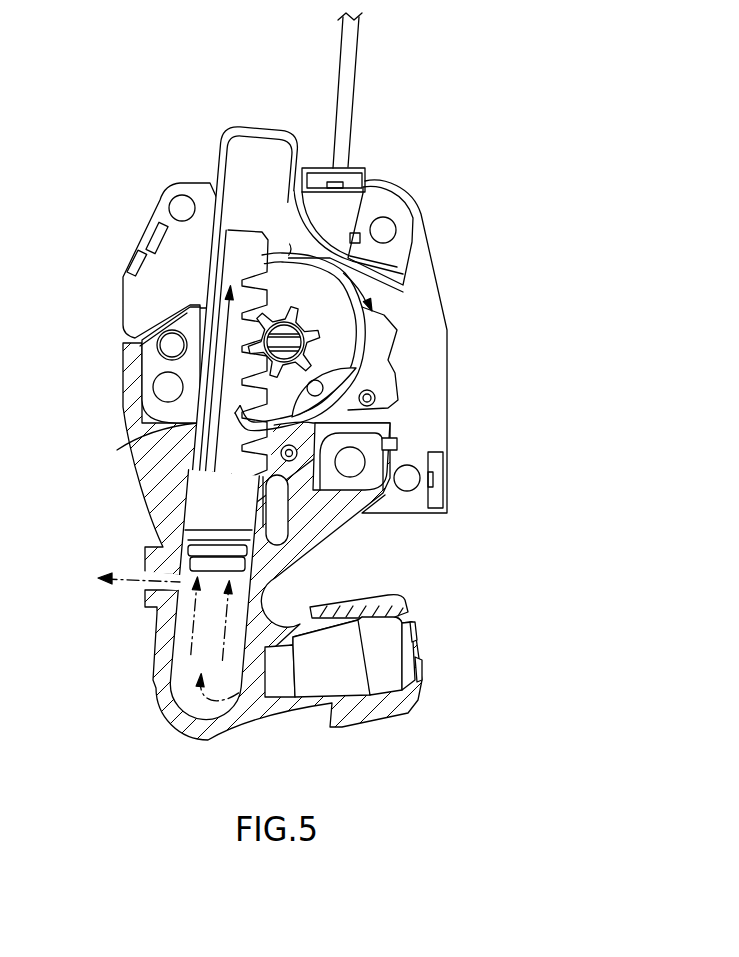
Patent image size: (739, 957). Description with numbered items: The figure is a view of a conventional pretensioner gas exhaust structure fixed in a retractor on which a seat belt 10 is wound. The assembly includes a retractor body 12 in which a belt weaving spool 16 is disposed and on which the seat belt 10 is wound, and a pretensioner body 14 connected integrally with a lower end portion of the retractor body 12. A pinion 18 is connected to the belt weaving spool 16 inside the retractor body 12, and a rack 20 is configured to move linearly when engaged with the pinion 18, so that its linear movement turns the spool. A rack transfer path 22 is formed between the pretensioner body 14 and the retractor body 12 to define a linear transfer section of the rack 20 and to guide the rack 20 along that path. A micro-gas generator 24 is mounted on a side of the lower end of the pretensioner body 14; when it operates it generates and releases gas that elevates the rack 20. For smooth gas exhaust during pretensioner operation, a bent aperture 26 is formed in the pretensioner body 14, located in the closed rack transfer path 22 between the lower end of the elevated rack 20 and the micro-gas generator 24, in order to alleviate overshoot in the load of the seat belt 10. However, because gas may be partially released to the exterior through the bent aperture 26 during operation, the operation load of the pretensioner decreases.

The seat belt 10 is at (346, 50).
The retractor body 12 is at (430, 318).
The pretensioner body 14 is at (148, 480).
The belt weaving spool 16 is at (343, 333).
The pinion 18 is at (353, 277).
The rack 20 is at (123, 453).
The rack transfer path 22 is at (160, 630).
The micro-gas generator (MGG) 24 is at (348, 683).
The bent aperture 26 is at (148, 580).